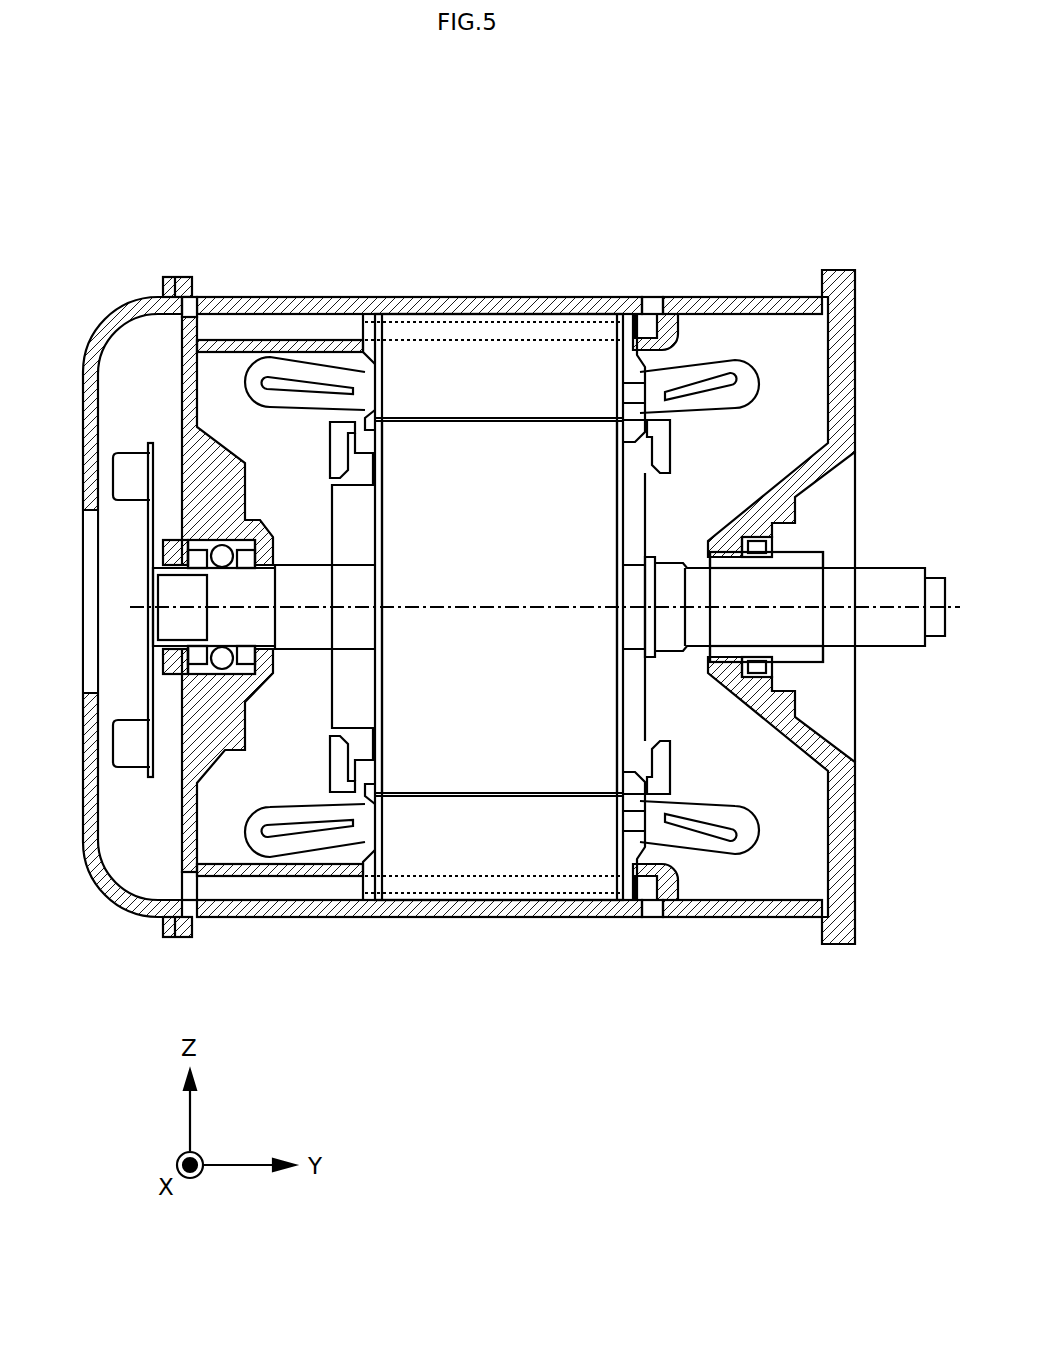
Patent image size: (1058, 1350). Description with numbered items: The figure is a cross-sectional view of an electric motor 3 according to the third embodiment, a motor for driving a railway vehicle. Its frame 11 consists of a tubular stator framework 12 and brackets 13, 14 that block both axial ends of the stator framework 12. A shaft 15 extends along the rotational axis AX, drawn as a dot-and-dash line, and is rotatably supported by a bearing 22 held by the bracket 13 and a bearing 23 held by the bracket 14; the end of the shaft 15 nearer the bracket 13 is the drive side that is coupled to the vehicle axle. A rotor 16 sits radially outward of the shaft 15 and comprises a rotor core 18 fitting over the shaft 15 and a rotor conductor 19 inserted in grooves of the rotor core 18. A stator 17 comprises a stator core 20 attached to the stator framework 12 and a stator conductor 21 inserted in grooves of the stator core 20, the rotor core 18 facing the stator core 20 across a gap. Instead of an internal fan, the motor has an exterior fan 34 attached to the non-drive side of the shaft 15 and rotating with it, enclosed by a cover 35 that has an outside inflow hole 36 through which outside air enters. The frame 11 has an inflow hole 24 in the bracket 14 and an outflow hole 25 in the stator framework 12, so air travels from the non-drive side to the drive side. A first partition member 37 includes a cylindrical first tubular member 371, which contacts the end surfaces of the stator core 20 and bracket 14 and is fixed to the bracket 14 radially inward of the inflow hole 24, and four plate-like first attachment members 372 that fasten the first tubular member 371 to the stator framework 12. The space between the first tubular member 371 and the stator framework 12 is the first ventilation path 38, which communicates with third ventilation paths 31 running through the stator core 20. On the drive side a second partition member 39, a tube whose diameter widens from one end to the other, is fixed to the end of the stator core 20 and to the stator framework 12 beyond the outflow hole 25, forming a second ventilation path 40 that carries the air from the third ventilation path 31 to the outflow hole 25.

The electric motor 3 is at (710, 133).
The frame 11 is at (376, 278).
The stator framework 12 is at (483, 305).
The bracket 13 is at (845, 385).
The bracket 14 is at (203, 483).
The shaft 15 is at (903, 582).
The rotor 16 is at (328, 518).
The stator 17 is at (318, 415).
The rotor core 18 is at (553, 363).
The rotor conductor 19 is at (638, 447).
The stator core 20 is at (568, 465).
The stator conductor 21 is at (707, 372).
The bearing 22 is at (772, 543).
The bearing 23 is at (250, 537).
The inflow hole 24 is at (181, 322).
The outflow hole 25 is at (649, 306).
The third ventilation path 31 is at (520, 318).
The exterior fan 34 is at (133, 477).
The cover 35 is at (140, 303).
The outside inflow hole 36 is at (92, 548).
The first partition member 37 is at (219, 358).
The first tubular member 371 is at (233, 352).
The first attachment member 372 is at (257, 328).
The first ventilation path 38 is at (243, 329).
The second partition member 39 is at (680, 338).
The second ventilation path 40 is at (657, 334).
The rotational axis AX is at (878, 614).